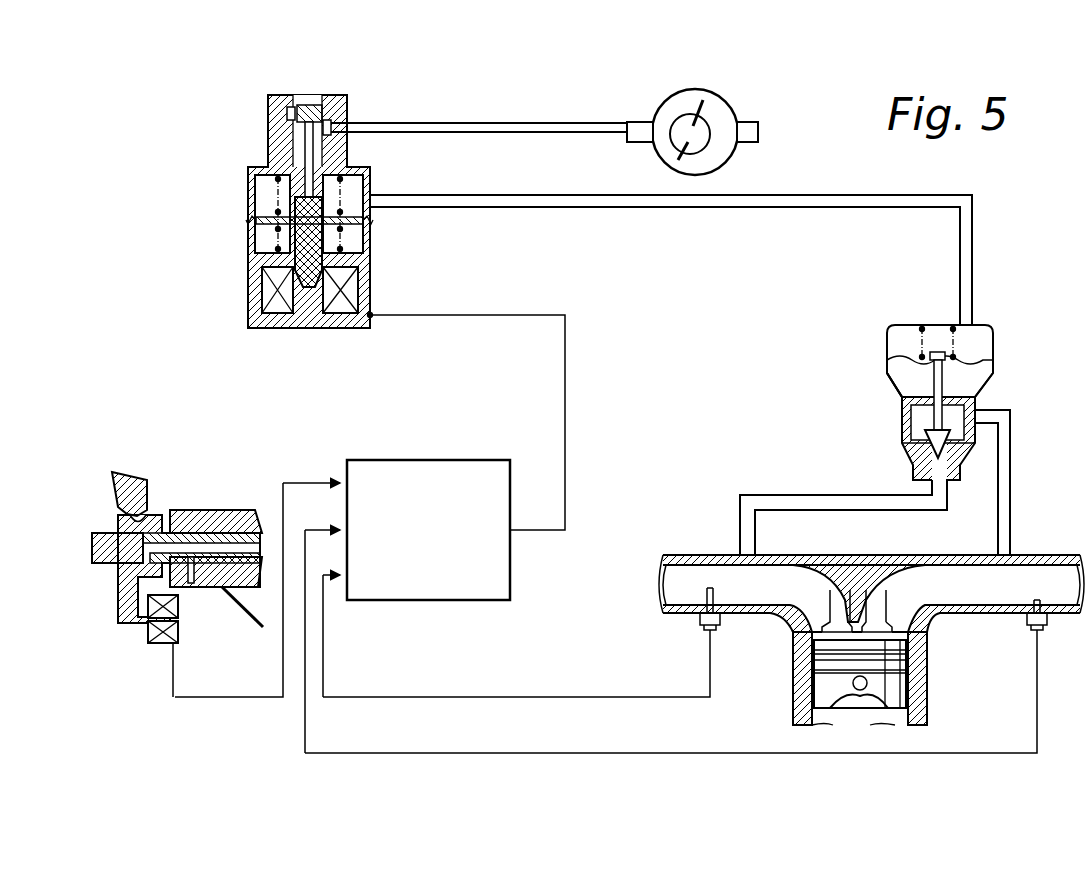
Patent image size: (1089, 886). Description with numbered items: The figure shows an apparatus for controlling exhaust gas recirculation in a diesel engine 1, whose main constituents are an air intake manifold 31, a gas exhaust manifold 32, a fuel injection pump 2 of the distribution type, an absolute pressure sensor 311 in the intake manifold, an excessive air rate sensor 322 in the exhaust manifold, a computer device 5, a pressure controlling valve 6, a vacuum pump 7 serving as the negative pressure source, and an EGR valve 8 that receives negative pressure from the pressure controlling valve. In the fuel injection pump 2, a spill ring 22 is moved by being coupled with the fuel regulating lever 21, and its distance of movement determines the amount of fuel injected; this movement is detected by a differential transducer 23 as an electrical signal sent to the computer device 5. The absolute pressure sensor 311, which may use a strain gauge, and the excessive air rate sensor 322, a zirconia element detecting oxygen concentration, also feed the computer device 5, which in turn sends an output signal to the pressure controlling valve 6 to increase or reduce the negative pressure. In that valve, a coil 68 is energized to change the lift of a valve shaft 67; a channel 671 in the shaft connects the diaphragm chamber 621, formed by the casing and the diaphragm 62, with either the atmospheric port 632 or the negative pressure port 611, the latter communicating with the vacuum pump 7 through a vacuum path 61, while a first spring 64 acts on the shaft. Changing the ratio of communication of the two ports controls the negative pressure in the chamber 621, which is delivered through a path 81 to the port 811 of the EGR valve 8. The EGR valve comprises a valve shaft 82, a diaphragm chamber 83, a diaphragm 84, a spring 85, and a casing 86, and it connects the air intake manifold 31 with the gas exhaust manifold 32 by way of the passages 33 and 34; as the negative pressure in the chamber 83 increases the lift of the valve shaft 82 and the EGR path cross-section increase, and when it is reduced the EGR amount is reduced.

The diesel engine 1 is at (930, 654).
The fuel injection pump 2 is at (114, 588).
The fuel regulating lever 21 is at (134, 478).
The spill ring 22 is at (158, 515).
The differential transducer 23 is at (180, 605).
The computer device 5 is at (479, 464).
The pressure controlling valve 6 is at (352, 104).
The vacuum path 61 is at (528, 123).
The negative pressure port 611 is at (335, 126).
The diaphragm 62 is at (260, 221).
The diaphragm chamber 621 is at (380, 190).
The atmospheric port 632 is at (288, 113).
The first spring 64 is at (275, 190).
The valve shaft 67 is at (320, 238).
The channel 671 is at (312, 150).
The coil 68 is at (348, 293).
The vacuum pump 7 is at (738, 110).
The EGR valve 8 is at (1000, 322).
The path 81 is at (852, 196).
The port 811 is at (968, 325).
The valve shaft 82 is at (940, 412).
The diaphragm chamber 83 is at (985, 345).
The diaphragm 84 is at (892, 372).
The spring 85 is at (920, 340).
The casing 86 is at (887, 340).
The air intake manifold 31 is at (1040, 570).
The absolute pressure sensor 311 is at (1052, 620).
The gas exhaust manifold 32 is at (720, 568).
The excessive air rate sensor 322 is at (695, 618).
The pipe 33 is at (1011, 470).
The pipe 34 is at (795, 495).